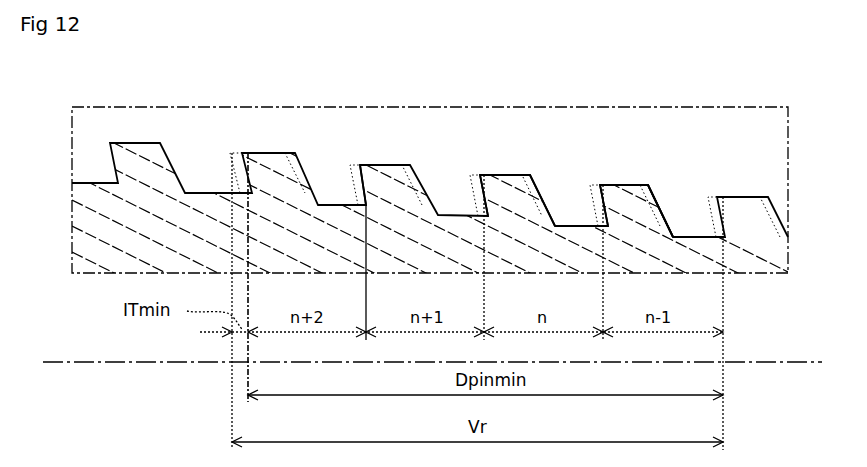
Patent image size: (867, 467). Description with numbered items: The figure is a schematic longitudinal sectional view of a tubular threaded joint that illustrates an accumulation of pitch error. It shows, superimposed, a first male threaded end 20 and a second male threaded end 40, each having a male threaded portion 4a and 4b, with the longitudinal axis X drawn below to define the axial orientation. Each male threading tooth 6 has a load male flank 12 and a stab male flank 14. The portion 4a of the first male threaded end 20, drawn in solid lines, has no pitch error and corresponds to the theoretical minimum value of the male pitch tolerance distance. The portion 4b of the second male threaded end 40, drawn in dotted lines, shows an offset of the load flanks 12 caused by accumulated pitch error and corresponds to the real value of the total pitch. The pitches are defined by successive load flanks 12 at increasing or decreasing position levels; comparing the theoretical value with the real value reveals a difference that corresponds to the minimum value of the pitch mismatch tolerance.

The first male threaded end 20 is at (110, 160).
The male threaded portion 4a is at (269, 153).
The male threaded portion 4b is at (351, 165).
The second male threaded end 40 is at (478, 188).
The male threading tooth 6 is at (630, 205).
The stab male flank 14 is at (660, 203).
The load male flank 12 is at (615, 203).
The longitudinal axis X is at (777, 362).